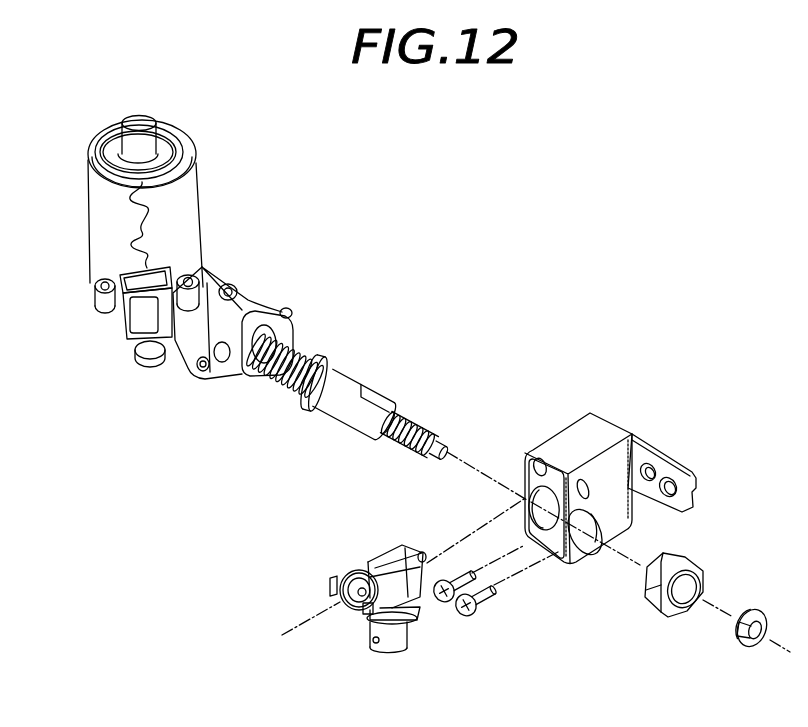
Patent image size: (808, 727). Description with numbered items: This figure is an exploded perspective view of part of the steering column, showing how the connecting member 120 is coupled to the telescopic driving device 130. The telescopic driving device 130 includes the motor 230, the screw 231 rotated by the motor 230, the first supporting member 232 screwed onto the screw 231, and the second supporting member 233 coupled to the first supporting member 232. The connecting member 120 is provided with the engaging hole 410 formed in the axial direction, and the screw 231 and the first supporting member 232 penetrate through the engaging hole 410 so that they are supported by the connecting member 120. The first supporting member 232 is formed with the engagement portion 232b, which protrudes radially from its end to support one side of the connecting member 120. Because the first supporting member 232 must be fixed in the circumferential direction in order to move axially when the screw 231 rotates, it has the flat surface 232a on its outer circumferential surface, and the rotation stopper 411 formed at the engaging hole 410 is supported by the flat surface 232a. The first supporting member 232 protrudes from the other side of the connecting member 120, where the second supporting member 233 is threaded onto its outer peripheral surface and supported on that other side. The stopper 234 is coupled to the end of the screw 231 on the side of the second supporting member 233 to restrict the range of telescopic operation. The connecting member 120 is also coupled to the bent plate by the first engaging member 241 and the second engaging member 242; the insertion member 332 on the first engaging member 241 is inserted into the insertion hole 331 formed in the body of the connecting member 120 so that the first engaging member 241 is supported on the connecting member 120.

The connecting member 120 is at (615, 488).
The telescopic driving device 130 is at (186, 362).
The motor 230 is at (178, 197).
The screw 231 is at (270, 376).
The first supporting member 232 is at (388, 378).
The flat surface 232a is at (382, 397).
The engagement portion 232b is at (337, 352).
The second supporting member 233 is at (655, 603).
The stopper 234 is at (740, 620).
The first engaging member 241 is at (382, 558).
The second engaging member 242 is at (487, 593).
The insertion hole 331 is at (525, 457).
The insertion member 332 is at (323, 587).
The engaging hole 410 is at (657, 545).
The rotation stopper 411 is at (588, 573).